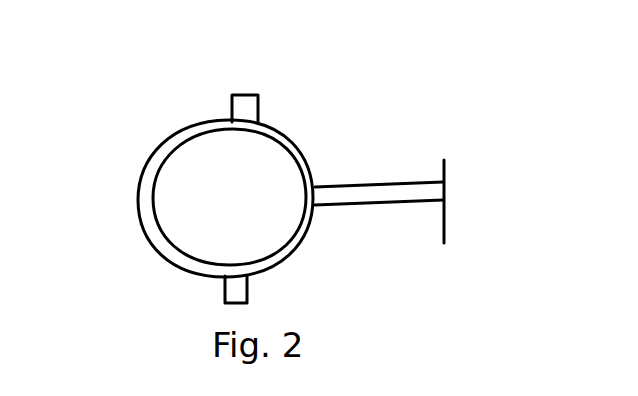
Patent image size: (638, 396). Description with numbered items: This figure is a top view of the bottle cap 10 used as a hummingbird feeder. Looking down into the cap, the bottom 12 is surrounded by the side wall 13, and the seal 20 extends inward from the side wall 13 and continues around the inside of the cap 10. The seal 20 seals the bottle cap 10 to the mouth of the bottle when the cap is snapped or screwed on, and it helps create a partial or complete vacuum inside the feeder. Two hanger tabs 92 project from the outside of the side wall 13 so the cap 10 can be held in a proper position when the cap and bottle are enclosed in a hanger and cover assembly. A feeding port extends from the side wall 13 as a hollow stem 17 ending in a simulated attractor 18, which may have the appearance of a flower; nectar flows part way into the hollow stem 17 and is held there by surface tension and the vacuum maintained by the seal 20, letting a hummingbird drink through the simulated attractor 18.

The bottle cap 10 is at (201, 91).
The seal 20 is at (157, 171).
The bottom 12 is at (258, 158).
The hanger tabs 92 is at (257, 96).
The side wall 13 is at (173, 258).
The hollow stem 17 is at (367, 190).
The simulated attractor 18 is at (452, 163).